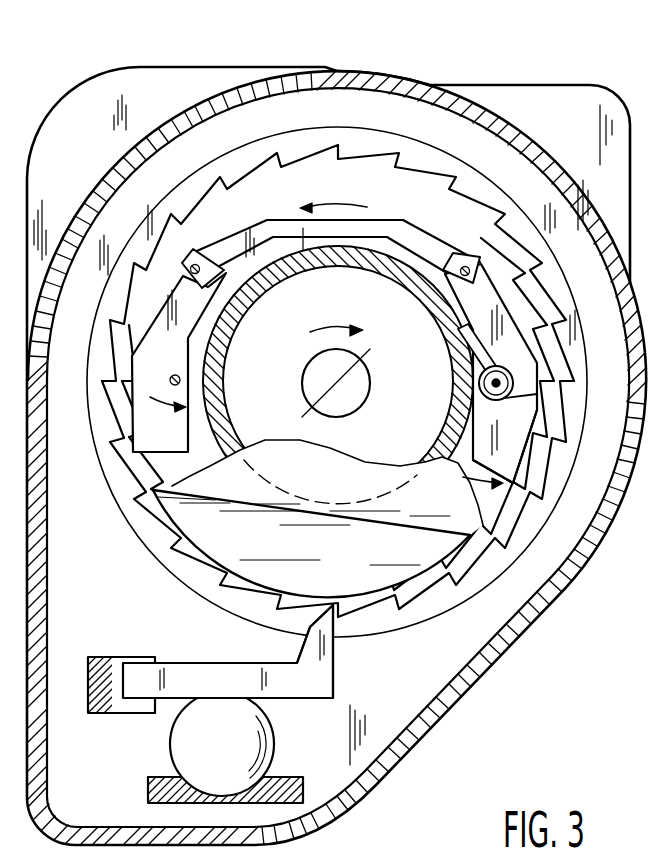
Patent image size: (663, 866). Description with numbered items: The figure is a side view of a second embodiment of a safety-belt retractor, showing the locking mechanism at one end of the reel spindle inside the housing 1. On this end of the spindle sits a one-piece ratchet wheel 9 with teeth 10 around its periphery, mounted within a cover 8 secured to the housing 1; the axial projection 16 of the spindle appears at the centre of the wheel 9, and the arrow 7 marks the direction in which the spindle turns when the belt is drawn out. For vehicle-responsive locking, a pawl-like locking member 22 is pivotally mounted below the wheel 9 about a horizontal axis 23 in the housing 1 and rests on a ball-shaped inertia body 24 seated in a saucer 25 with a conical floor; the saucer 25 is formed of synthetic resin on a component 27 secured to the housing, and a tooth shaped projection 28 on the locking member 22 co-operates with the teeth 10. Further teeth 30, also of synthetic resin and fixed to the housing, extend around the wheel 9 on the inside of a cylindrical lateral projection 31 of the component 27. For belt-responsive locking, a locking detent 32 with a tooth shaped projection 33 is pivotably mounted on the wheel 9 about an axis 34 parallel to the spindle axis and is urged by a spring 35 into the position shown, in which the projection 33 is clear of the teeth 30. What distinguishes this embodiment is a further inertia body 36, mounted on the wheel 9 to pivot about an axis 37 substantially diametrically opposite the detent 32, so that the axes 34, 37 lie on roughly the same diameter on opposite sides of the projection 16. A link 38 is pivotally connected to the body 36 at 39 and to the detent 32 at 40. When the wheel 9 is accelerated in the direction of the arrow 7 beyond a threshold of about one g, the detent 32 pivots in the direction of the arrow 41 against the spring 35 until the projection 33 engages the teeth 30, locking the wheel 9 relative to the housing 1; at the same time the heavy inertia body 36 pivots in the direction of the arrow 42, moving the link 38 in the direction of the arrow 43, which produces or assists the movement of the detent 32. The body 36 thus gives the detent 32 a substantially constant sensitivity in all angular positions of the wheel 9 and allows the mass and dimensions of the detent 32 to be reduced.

The housing 1 is at (143, 80).
The arrow 7 is at (330, 332).
The cover 8 is at (530, 152).
The ratchet wheel 9 is at (283, 458).
The teeth 10 is at (347, 588).
The axial projection 16 is at (353, 373).
The locking member 22 is at (200, 677).
The horizontal axis 23 is at (147, 676).
The inertia body 24 is at (253, 747).
The saucer 25 is at (158, 793).
The component 27 is at (418, 115).
The tooth shaped projection 28 is at (340, 620).
The teeth 30 is at (397, 173).
The cylindrical lateral projection 31 is at (430, 157).
The locking detent 32 is at (488, 297).
The tooth shaped projection 33 is at (503, 470).
The axis 34 is at (490, 382).
The spring 35 is at (490, 404).
The inertia body 36 is at (185, 313).
The axis 37 is at (180, 380).
The link 38 is at (285, 224).
The pivotal connection 39 is at (197, 263).
The pivotal connection 40 is at (458, 263).
The arrow 41 is at (483, 483).
The arrow 42 is at (153, 398).
The arrow 43 is at (358, 207).